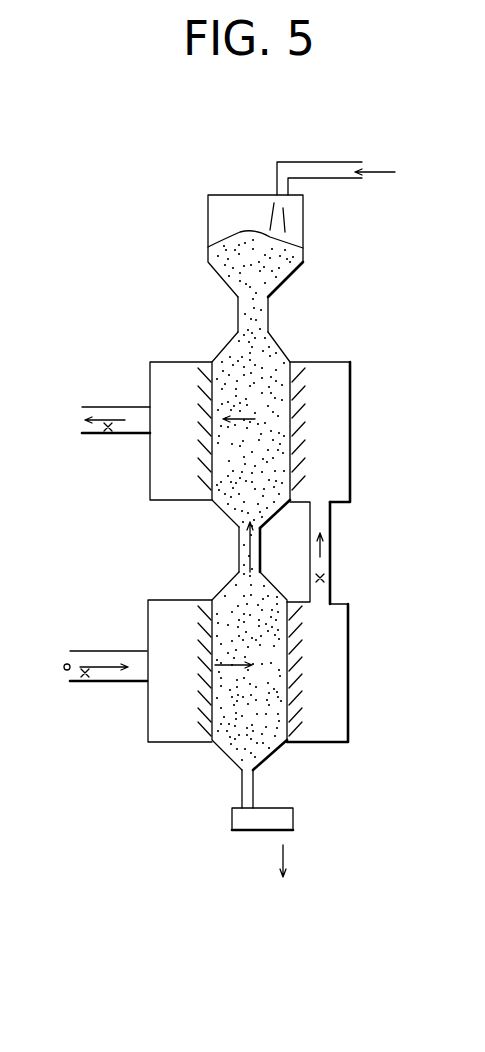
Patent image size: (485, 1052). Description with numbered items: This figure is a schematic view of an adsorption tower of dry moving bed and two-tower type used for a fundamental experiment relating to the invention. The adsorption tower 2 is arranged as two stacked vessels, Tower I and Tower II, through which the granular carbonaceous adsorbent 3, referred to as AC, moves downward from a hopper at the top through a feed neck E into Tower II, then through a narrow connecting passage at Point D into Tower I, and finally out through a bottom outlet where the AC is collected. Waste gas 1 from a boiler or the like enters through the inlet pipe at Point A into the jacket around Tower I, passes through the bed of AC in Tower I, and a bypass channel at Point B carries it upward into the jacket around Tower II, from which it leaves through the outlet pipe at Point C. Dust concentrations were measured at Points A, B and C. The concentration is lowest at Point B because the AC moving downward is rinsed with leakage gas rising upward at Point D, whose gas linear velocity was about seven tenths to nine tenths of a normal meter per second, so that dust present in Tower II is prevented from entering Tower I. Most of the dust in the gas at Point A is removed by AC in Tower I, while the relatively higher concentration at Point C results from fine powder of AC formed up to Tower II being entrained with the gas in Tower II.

The waste gas 1 is at (56, 665).
The adsorption tower 2 is at (217, 752).
The granular carbonaceous adsorbent 3 is at (257, 370).
The Point A is at (85, 682).
The Point B is at (328, 578).
The Point C is at (108, 434).
The Point D is at (253, 546).
The feed neck from hopper E is at (238, 313).
The element AC is at (270, 265).
The Tower I is at (272, 671).
The Tower II is at (276, 482).